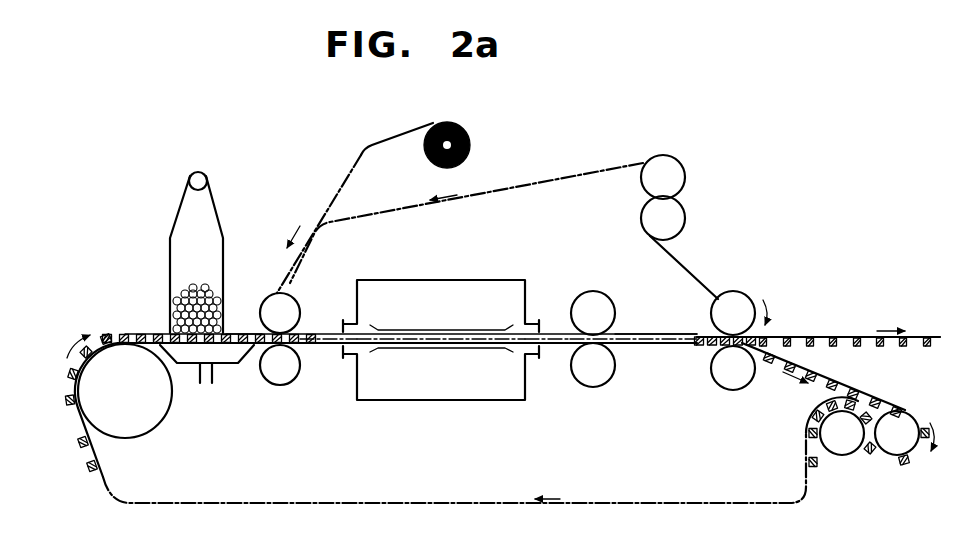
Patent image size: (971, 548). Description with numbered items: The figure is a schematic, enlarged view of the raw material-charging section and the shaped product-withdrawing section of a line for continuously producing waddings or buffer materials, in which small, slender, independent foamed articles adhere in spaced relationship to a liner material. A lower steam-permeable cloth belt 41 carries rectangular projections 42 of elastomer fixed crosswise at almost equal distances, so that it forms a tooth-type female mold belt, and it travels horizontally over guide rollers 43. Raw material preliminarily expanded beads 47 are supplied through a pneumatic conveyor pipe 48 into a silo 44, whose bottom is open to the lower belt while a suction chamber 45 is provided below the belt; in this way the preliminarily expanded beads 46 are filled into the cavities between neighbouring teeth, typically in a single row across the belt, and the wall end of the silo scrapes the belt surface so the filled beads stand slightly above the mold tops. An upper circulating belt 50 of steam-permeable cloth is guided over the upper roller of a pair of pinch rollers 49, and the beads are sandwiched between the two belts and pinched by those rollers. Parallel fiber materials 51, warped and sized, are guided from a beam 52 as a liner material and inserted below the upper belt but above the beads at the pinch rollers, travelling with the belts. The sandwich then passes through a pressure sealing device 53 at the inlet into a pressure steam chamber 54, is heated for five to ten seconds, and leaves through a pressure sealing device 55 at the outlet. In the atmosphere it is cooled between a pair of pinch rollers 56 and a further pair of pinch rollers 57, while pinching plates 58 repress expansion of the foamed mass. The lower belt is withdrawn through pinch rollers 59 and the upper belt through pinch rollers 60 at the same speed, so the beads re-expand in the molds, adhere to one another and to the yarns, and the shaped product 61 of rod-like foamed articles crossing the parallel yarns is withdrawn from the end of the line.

The lower steam-permeable cloth belt 41 is at (96, 450).
The rectangular projections of elastomer 42 is at (83, 452).
The guide rollers 43 is at (160, 415).
The silo 44 is at (170, 240).
The suction chamber 45 is at (228, 365).
The preliminarily expanded beads 46 is at (243, 333).
The raw material preliminarily expanded beads 47 is at (195, 285).
The pneumatic conveyor pipe 48 is at (189, 177).
The pinch roller 49 is at (296, 381).
The upper circulating belt 50 is at (410, 207).
The parallel fiber materials 51 is at (350, 172).
The beam 52 is at (463, 126).
The pressure sealing device 53 is at (335, 333).
The pressure steam chamber 54 is at (497, 280).
The pressure sealing device 55 is at (555, 333).
The pinch roller 56 is at (607, 382).
The pinch roller 57 is at (747, 387).
The pinching plate 58 is at (683, 346).
The pinch roller 59 is at (842, 455).
The pinch roller 60 is at (684, 213).
The shaped product 61 is at (884, 341).